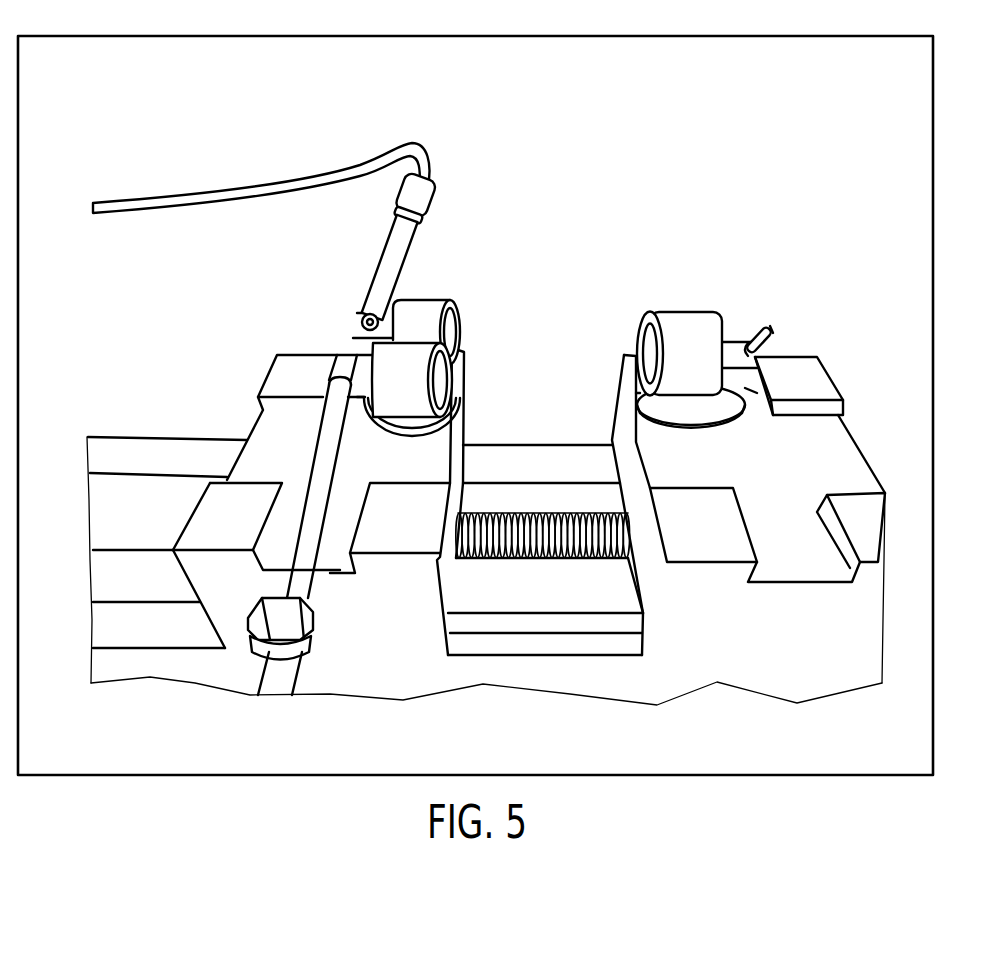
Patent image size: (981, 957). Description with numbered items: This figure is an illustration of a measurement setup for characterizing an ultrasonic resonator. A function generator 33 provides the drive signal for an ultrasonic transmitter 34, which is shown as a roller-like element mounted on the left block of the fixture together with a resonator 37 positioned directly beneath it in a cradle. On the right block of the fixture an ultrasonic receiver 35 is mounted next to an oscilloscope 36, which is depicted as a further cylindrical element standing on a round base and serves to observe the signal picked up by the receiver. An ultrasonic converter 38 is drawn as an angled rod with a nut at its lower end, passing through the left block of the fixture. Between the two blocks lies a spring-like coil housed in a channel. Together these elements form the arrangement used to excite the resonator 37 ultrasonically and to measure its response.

The function generator 33 is at (205, 198).
The ultrasonic transmitter 34 is at (422, 313).
The ultrasonic receiver 35 is at (767, 323).
The oscilloscope 36 is at (682, 325).
The resonator 37 is at (420, 378).
The ultrasonic converter 38 is at (267, 663).